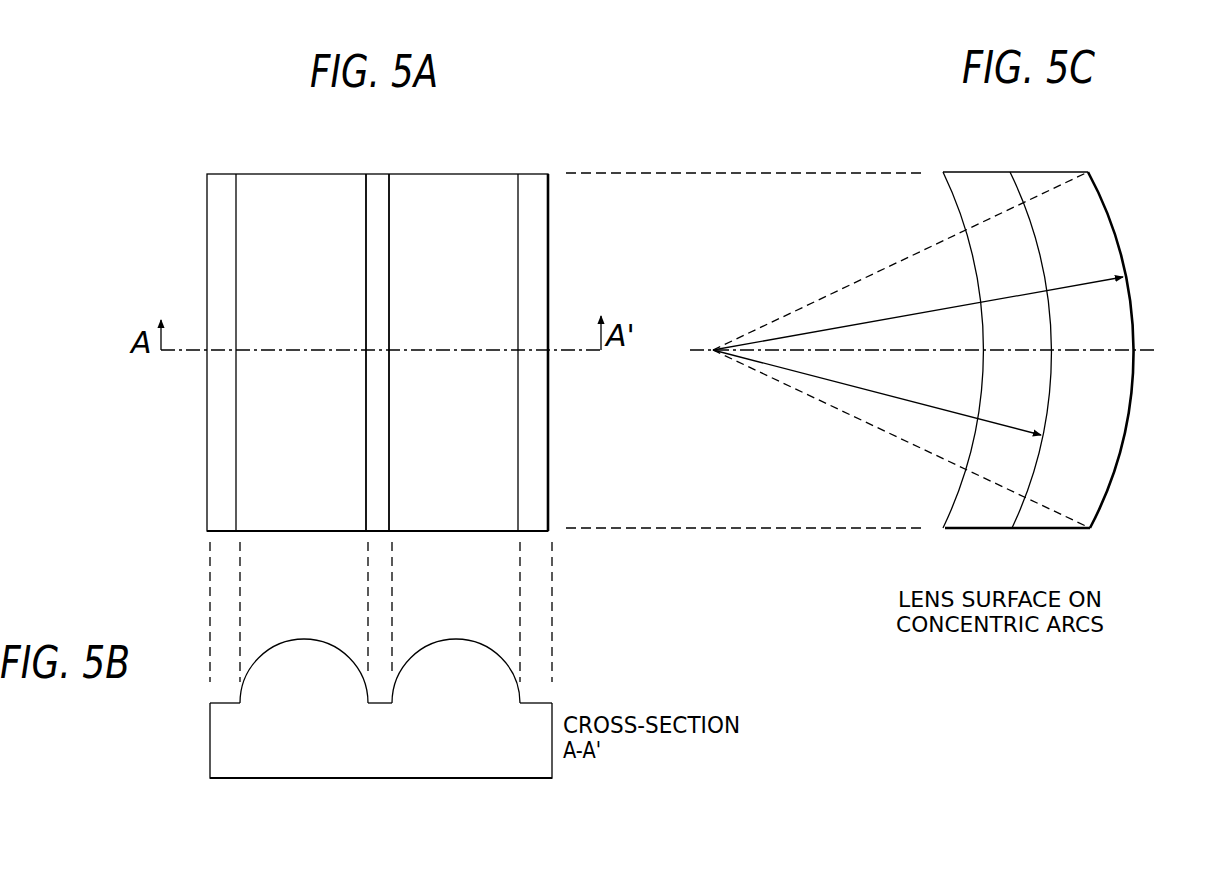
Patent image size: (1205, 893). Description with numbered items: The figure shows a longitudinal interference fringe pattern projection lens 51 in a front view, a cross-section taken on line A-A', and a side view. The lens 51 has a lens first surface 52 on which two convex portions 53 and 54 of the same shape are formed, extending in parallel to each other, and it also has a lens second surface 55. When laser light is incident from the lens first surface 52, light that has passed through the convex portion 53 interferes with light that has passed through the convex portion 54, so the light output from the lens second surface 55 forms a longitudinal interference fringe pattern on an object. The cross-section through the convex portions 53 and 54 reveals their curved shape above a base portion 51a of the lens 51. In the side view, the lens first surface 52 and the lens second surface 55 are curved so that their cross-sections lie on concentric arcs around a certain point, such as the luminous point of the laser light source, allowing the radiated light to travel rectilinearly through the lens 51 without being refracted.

In FIG. 5A, the longitudinal interference fringe pattern projection lens 51 is at (386, 381).
In FIG. 5C, the longitudinal interference fringe pattern projection lens 51 is at (1035, 356).
In FIG. 5A, the substrate / base portion of lens array 51a is at (206, 322).
In FIG. 5B, the substrate / base portion of lens array 51a is at (216, 747).
In FIG. 5C, the substrate / base portion of lens array 51a is at (1046, 180).
In FIG. 5A, the lens first surface 52 is at (218, 447).
In FIG. 5B, the lens first surface 52 is at (230, 702).
In FIG. 5C, the lens first surface 52 is at (1018, 512).
In FIG. 5A, the convex portion 53 is at (322, 532).
In FIG. 5B, the convex portion 53 is at (300, 638).
In FIG. 5C, the convex portion 53 is at (958, 530).
In FIG. 5A, the convex portion 54 is at (464, 532).
In FIG. 5B, the convex portion 54 is at (452, 638).
In FIG. 5B, the lens second surface 55 is at (297, 781).
In FIG. 5C, the lens second surface 55 is at (1112, 468).